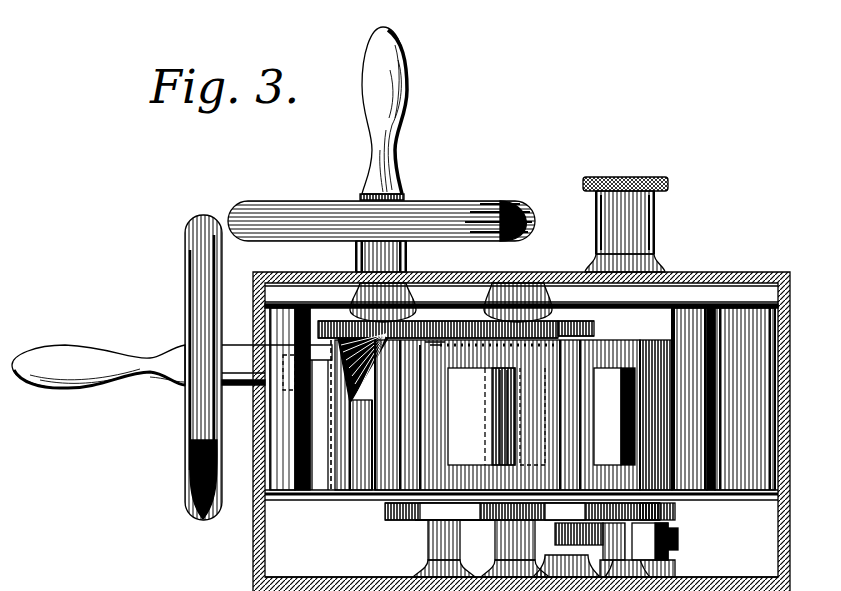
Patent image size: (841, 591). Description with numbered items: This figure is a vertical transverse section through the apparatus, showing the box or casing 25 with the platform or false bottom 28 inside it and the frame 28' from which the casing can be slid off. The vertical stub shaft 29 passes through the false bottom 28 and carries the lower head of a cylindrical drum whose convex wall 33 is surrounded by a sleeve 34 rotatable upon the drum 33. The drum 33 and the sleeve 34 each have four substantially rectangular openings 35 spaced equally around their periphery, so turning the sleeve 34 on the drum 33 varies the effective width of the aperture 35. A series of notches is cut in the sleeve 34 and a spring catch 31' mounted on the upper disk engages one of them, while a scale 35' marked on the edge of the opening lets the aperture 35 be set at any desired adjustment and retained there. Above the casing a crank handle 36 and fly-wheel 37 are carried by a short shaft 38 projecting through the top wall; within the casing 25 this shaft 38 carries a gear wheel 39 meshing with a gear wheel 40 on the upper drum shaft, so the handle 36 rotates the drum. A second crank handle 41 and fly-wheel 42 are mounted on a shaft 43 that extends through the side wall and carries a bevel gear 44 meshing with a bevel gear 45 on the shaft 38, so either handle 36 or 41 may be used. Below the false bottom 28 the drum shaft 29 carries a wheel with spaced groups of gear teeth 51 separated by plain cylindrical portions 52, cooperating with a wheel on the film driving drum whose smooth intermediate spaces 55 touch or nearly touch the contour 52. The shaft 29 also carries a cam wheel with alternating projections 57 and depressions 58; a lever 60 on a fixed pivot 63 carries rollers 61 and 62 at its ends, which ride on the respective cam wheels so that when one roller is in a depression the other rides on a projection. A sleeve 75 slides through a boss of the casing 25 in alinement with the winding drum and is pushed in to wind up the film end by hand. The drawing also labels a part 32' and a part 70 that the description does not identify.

The casing 25 is at (710, 274).
The platform or false bottom 28 is at (521, 509).
The frame 28' is at (521, 562).
The vertical stub shaft 29 is at (548, 556).
The spring catch 31' is at (500, 355).
The stop 32' is at (435, 352).
The drum 33 is at (502, 434).
The sleeve 34 is at (507, 415).
The rectangular openings 35 is at (614, 416).
The scale 35' is at (496, 416).
The crank handle 36 is at (407, 107).
The fly-wheel 37 is at (452, 210).
The short shaft 38 is at (408, 252).
The gear wheel 39 is at (425, 322).
The gear wheel 40 is at (596, 331).
The crank handle 41 is at (86, 388).
The fly-wheel 42 is at (190, 300).
The shaft 43 is at (243, 386).
The bevel gear 44 is at (352, 396).
The bevel gear 45 is at (378, 352).
The gear teeth 51 is at (385, 513).
The intermediate portions 52 is at (414, 516).
The intermediate spaces 55 is at (675, 514).
The projections 57 is at (474, 538).
The depressions 58 is at (579, 534).
The lever 60 is at (676, 563).
The roller 61 is at (676, 538).
The roller 62 is at (613, 541).
The fixed pivot 63 is at (650, 541).
The drum 70 is at (657, 357).
The sleeve 75 is at (644, 220).